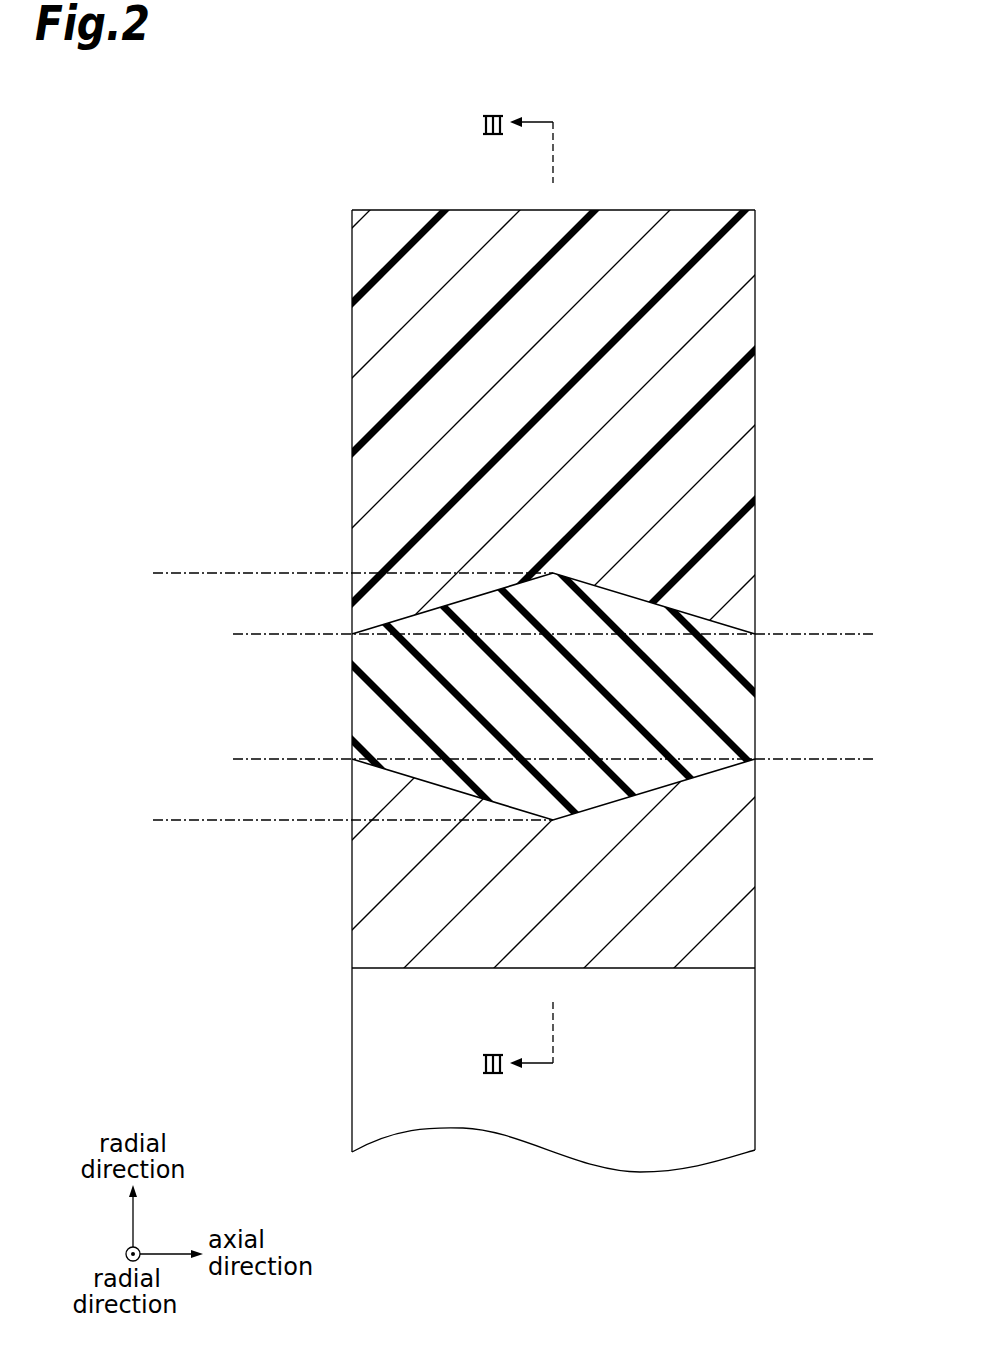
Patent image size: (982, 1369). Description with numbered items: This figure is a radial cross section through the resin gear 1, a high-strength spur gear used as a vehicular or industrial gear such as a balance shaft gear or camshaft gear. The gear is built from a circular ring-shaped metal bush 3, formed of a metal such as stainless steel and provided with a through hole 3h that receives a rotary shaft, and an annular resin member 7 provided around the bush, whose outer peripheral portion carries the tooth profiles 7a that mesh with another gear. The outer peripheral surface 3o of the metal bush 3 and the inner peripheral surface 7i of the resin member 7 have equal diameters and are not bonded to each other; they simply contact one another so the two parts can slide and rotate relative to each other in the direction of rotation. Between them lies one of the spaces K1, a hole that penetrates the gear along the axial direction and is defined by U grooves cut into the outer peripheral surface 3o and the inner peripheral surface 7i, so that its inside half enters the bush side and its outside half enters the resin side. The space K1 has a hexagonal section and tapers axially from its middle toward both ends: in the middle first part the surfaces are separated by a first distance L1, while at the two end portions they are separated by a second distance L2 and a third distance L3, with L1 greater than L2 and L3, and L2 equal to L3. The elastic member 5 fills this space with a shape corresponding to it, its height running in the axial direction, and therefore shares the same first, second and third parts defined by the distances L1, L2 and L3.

The resin gear 1 is at (268, 237).
The tooth profile 7a is at (733, 210).
The resin member 7 is at (738, 399).
The inner peripheral surface 7i is at (729, 627).
The elastic member 5 is at (738, 708).
The outer peripheral surface 3o is at (717, 769).
The metal bush 3 is at (738, 861).
The through hole 3h is at (684, 1082).
The space K1 is at (352, 634).
The first distance L1 is at (171, 575).
The second distance L2 is at (258, 636).
The third distance L3 is at (850, 636).